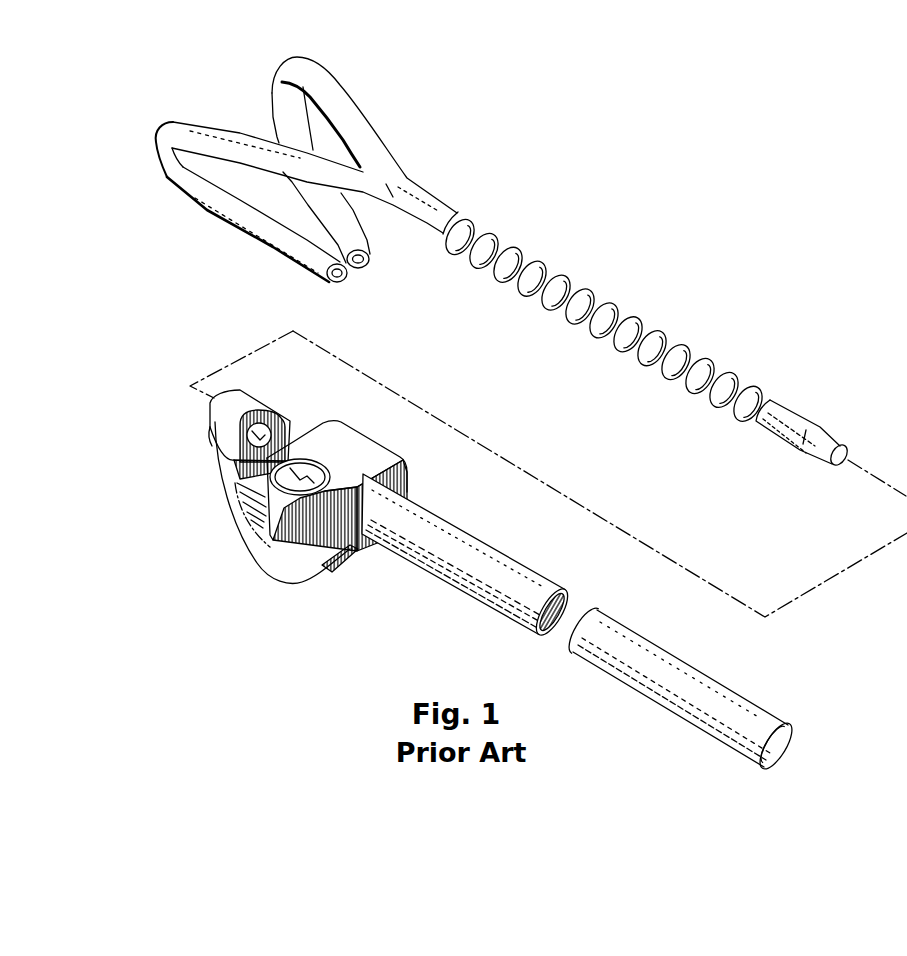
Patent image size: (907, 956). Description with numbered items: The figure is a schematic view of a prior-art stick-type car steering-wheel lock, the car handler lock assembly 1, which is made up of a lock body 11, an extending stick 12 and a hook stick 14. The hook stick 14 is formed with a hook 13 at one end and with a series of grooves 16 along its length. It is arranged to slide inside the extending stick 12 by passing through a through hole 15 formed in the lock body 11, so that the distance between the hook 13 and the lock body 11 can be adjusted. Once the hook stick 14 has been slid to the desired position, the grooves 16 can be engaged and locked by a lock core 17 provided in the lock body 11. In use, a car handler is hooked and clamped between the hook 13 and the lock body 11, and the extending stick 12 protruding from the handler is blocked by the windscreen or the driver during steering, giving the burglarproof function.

The car handler lock assembly 1 is at (503, 262).
The lock body 11 is at (284, 510).
The extending stick 12 is at (472, 592).
The hook 13 is at (360, 132).
The hook stick 14 is at (604, 321).
The through hole 15 is at (245, 451).
The grooves 16 is at (627, 355).
The lock core 17 is at (291, 484).